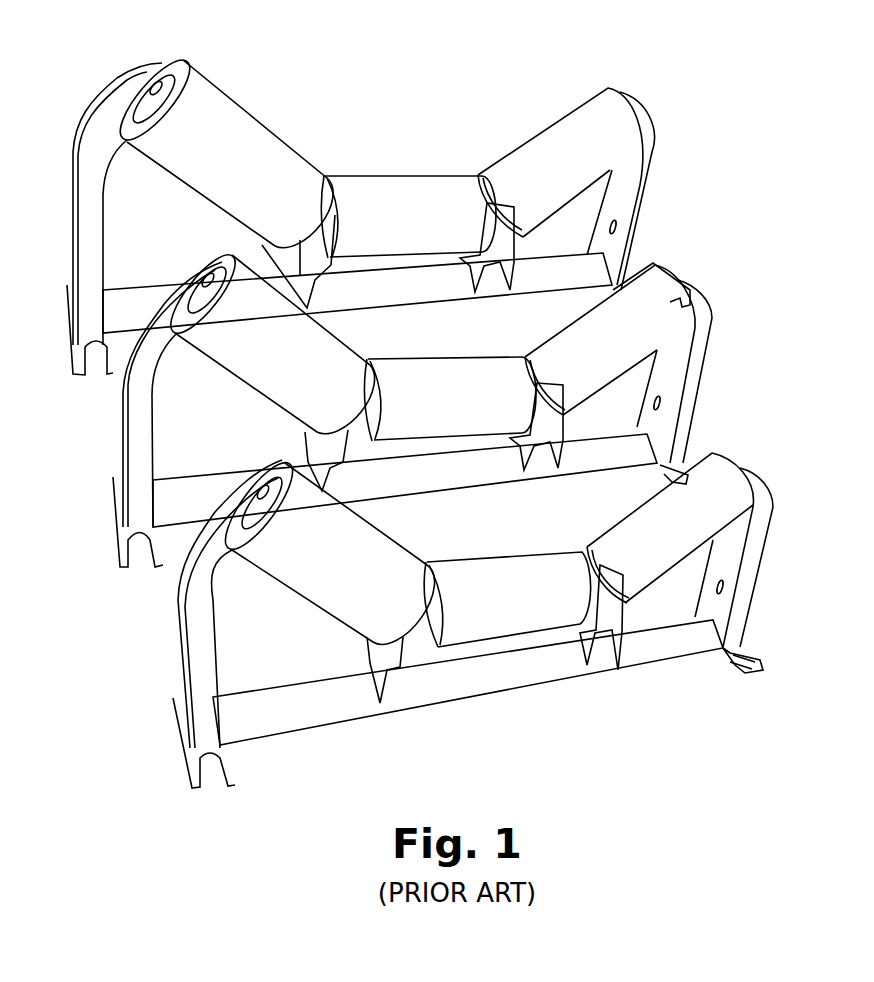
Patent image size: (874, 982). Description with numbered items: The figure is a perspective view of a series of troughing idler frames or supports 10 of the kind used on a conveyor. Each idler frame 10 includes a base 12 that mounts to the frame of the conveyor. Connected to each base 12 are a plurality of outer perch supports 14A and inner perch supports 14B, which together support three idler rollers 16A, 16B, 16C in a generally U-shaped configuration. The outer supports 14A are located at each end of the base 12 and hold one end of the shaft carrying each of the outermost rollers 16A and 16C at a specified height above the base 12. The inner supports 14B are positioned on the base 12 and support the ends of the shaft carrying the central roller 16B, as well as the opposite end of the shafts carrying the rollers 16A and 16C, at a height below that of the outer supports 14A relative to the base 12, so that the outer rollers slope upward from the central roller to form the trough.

The troughing idler frame 10 is at (443, 398).
The base 12 is at (407, 297).
The outer perch support 14A is at (102, 263).
The inner perch support 14B is at (270, 257).
The outermost roller 16A is at (277, 146).
The central roller 16B is at (397, 180).
The outermost roller 16C is at (553, 130).